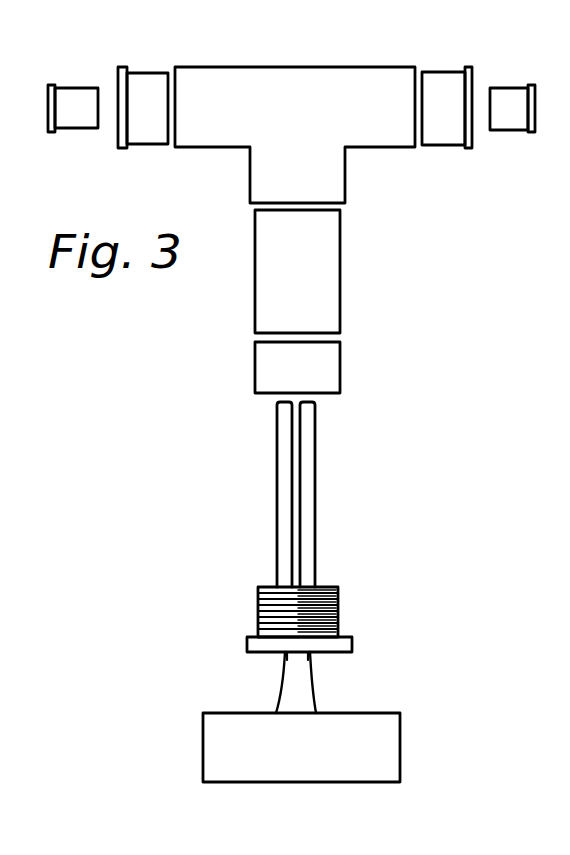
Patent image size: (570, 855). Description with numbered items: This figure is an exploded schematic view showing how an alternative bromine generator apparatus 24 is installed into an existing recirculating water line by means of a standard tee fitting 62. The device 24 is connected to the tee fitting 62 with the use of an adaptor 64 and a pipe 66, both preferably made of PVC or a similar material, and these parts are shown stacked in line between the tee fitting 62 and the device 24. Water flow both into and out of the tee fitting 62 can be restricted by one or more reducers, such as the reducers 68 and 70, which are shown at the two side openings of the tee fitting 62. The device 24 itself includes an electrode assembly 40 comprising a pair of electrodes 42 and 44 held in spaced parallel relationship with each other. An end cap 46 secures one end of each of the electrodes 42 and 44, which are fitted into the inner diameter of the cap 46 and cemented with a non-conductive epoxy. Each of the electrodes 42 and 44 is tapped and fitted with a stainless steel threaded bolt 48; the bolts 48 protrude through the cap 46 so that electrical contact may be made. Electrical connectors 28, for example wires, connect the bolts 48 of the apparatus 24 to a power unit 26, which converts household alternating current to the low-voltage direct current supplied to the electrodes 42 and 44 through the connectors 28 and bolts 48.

The bromine generator apparatus 24 is at (332, 637).
The power unit 26 is at (387, 708).
The electrical connectors 28 is at (280, 695).
The electrode assembly 40 is at (288, 494).
The electrode 42 is at (313, 482).
The electrode 44 is at (278, 485).
The end cap 46 is at (337, 595).
The threaded bolt 48 is at (282, 658).
The tee fitting 62 is at (282, 80).
The adaptor 64 is at (342, 358).
The pipe 66 is at (342, 275).
The reducer 68 is at (137, 77).
The reducer 70 is at (77, 88).